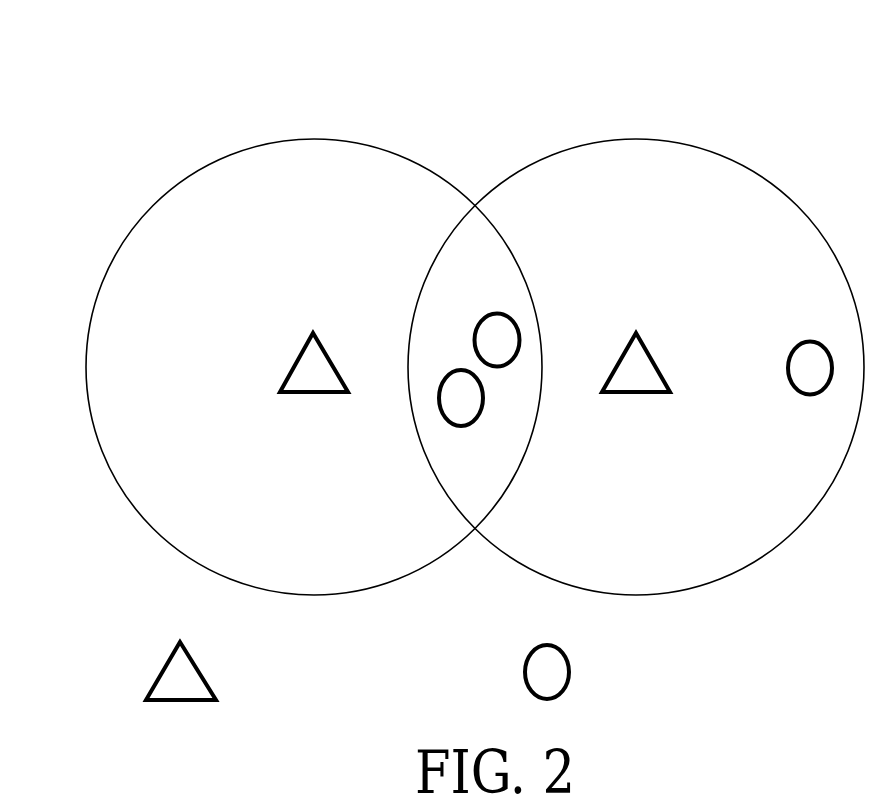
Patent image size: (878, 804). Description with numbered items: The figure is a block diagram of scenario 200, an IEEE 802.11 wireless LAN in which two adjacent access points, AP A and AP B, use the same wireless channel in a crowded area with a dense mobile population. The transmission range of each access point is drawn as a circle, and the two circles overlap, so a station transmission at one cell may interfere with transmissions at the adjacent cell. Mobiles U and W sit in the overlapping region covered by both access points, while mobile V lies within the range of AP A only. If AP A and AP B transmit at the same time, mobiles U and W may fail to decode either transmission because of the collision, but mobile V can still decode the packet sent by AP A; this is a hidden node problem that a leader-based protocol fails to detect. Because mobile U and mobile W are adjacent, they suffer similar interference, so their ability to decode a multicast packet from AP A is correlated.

The scenario 200 is at (76, 43).
The access point A is at (636, 362).
The access point B is at (314, 362).
The mobile U u is at (461, 398).
The mobile V v is at (810, 368).
The mobile W w is at (497, 340).